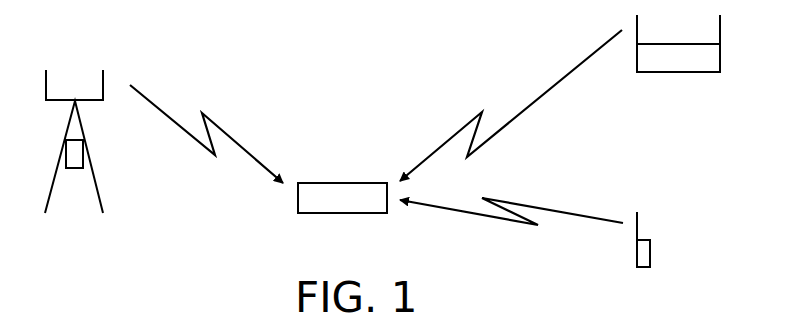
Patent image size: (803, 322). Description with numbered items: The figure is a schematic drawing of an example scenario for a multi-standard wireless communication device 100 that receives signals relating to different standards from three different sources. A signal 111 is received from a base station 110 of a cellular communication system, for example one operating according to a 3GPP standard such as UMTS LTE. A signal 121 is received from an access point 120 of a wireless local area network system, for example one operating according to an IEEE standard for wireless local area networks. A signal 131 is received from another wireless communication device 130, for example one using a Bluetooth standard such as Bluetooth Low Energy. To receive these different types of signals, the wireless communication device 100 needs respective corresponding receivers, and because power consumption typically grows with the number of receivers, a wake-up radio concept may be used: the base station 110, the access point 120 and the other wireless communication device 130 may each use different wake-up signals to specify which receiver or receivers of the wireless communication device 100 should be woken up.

The wireless communication device 100 is at (342, 198).
The base station 110 is at (83, 146).
The signal 111 is at (228, 133).
The access point 120 is at (678, 43).
The signal 121 is at (453, 135).
The other wireless communication device 130 is at (650, 268).
The signal 131 is at (592, 218).